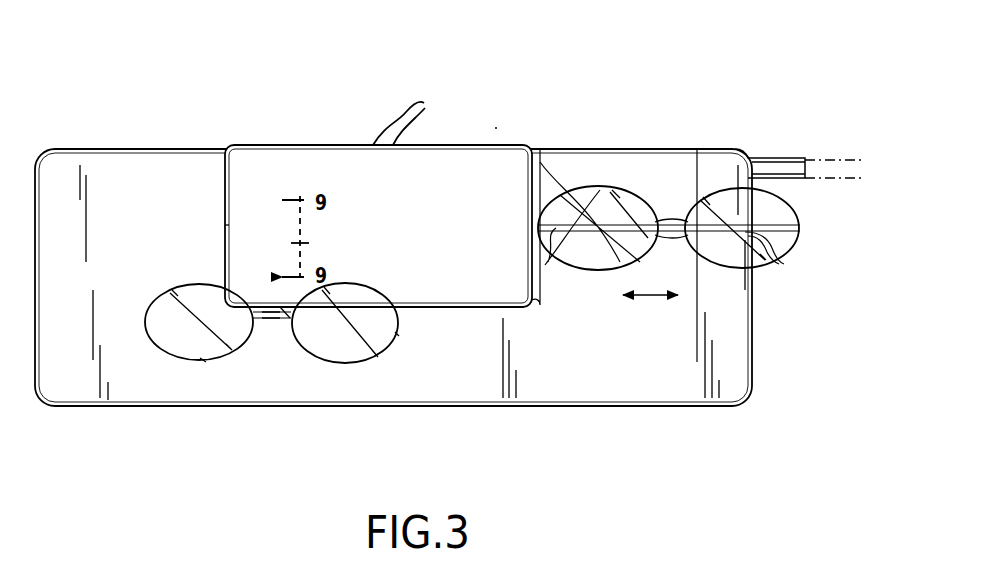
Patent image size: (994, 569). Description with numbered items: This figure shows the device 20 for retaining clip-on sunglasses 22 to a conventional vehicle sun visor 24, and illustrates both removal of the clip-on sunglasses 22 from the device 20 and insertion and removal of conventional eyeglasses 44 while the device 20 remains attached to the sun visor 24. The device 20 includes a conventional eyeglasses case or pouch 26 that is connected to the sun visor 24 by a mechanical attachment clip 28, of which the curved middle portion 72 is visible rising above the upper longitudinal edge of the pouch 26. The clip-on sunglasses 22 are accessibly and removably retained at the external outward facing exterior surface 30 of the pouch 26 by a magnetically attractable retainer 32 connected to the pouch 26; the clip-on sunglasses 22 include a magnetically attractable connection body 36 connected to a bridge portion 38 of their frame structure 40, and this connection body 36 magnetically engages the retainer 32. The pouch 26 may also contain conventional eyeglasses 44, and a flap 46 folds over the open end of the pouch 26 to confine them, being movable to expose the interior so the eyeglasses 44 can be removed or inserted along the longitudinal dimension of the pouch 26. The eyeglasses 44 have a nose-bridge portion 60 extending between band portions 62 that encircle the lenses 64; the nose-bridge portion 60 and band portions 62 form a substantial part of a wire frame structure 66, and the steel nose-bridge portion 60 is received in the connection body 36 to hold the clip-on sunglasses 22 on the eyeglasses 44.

The device 20 is at (497, 124).
The clip-on sunglasses 22 is at (161, 290).
The sun visor 24 is at (131, 148).
The eyeglasses case or pouch 26 is at (246, 178).
The mechanical attachment clip 28 is at (380, 100).
The exterior surface 30 is at (240, 226).
The magnetically attractable retainer 32 is at (306, 243).
The connection body 36 is at (272, 322).
The bridge portion 38 is at (285, 322).
The frame structure 40 is at (398, 335).
The eyeglasses 44 is at (787, 270).
The flap 46 is at (566, 186).
The nose-bridge portion 60 is at (677, 186).
The band portions 62 is at (600, 272).
The lenses 64 is at (613, 192).
The wire frame structure 66 is at (715, 174).
The curved middle portion 72 is at (425, 106).